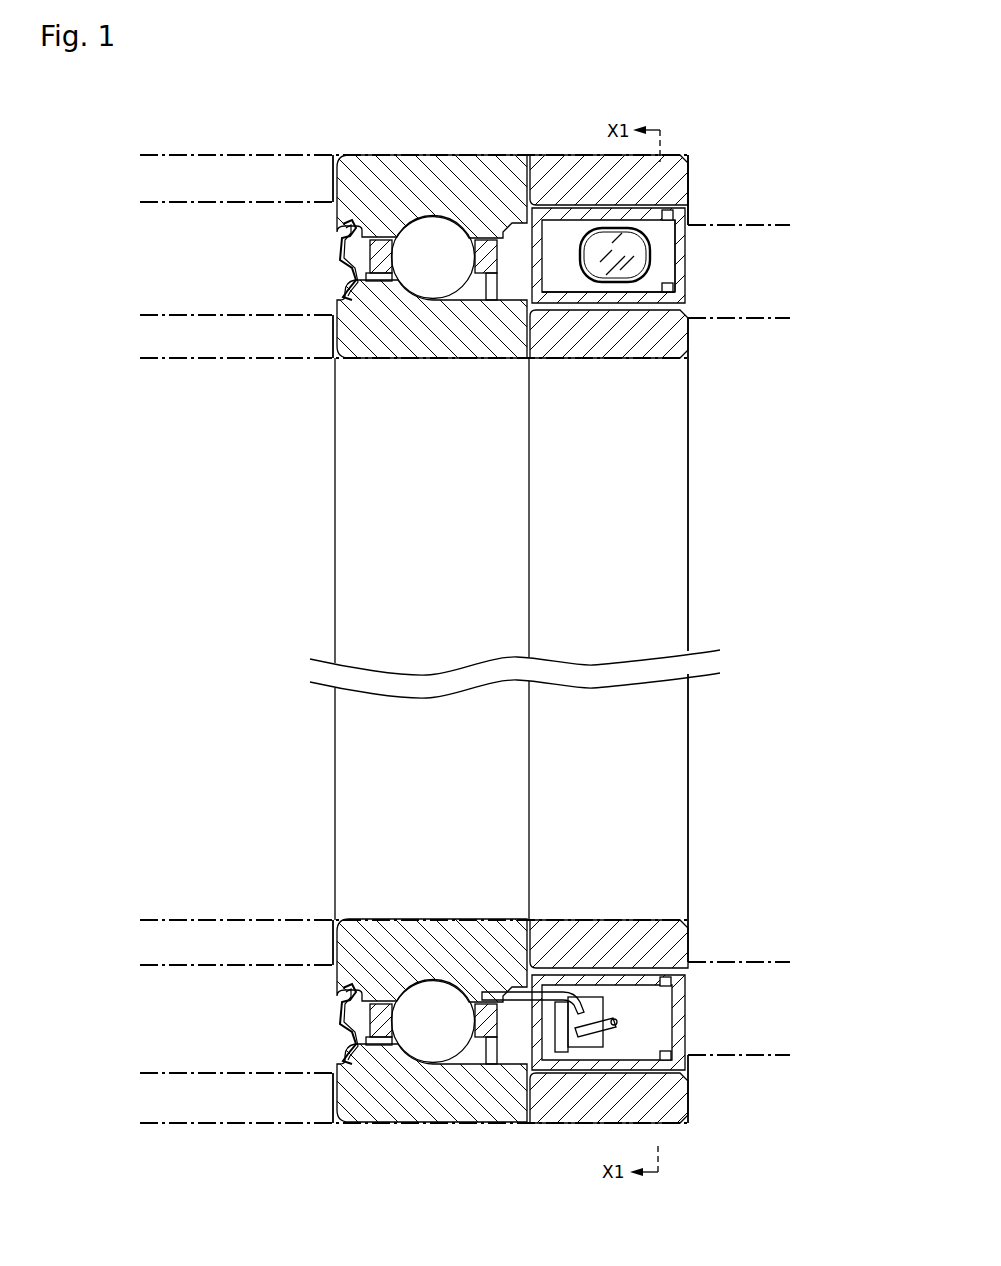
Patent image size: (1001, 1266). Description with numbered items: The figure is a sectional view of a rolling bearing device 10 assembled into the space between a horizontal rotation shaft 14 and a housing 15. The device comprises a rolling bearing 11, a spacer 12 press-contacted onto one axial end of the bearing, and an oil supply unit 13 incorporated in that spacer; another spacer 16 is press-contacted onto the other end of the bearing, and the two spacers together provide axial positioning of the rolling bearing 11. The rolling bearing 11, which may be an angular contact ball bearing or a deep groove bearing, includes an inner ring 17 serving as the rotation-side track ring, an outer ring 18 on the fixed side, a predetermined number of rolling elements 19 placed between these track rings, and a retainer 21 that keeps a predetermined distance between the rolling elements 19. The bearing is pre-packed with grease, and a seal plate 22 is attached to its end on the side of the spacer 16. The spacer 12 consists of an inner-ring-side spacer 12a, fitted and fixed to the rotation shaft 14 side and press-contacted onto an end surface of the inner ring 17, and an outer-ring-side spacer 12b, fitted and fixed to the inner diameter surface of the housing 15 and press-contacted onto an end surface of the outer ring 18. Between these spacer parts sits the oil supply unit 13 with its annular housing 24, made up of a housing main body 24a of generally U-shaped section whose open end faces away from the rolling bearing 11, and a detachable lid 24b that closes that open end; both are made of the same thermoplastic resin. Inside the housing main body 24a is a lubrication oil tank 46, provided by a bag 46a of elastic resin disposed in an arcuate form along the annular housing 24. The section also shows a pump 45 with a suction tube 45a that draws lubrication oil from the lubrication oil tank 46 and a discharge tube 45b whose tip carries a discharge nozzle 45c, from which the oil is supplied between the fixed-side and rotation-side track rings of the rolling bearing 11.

The rolling bearing device 10 is at (540, 256).
The rolling bearing 11 is at (413, 266).
The spacer 12 is at (654, 264).
The inner-ring-side spacer 12a is at (552, 336).
The outer-ring-side spacer 12b is at (546, 172).
The oil supply unit 13 is at (698, 223).
The rotation shaft 14 is at (228, 380).
The housing 15 is at (282, 142).
The spacer 16 is at (305, 192).
The inner ring 17 is at (458, 342).
The outer ring 18 is at (458, 172).
The rolling elements 19 is at (420, 233).
The retainer 21 is at (380, 265).
The seal plate 22 is at (336, 280).
The annular housing 24 is at (656, 313).
The housing main body 24a is at (646, 298).
The lid 24b is at (681, 280).
The pump 45 is at (610, 1082).
The suction tube 45a is at (606, 1030).
The discharge tube 45b is at (566, 1004).
The discharge nozzle 45c is at (502, 1001).
The lubrication oil tank 46 is at (677, 255).
The bag 46a is at (651, 262).